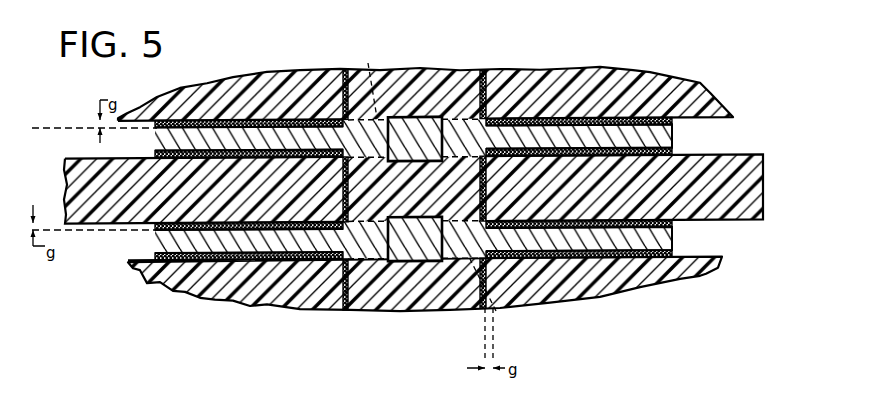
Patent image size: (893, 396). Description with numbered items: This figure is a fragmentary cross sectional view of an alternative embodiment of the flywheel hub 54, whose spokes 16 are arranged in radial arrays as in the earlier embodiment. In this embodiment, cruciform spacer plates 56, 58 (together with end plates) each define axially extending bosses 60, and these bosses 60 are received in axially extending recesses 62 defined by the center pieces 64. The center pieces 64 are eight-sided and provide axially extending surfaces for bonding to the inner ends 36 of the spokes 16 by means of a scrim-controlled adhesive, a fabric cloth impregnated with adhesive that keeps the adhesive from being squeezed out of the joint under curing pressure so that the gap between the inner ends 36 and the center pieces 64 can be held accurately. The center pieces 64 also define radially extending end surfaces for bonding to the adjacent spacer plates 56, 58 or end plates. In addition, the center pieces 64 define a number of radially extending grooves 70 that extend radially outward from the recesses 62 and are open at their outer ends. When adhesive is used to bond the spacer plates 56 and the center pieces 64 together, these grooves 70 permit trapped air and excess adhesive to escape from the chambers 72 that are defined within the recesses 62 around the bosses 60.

The spokes 16 is at (218, 95).
The inner ends 36 is at (333, 89).
The flywheel hub 54 is at (681, 34).
The cruciform spacer plate 56 is at (655, 136).
The cruciform spacer plate 58 is at (650, 240).
The bosses 60 is at (427, 133).
The recesses 62 is at (440, 224).
The center pieces 64 is at (460, 100).
The grooves 70 is at (368, 63).
The chambers 72 is at (410, 118).